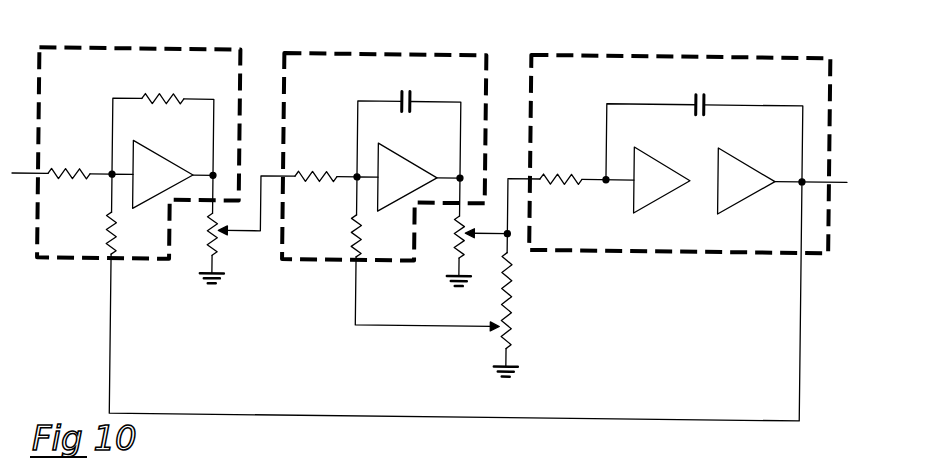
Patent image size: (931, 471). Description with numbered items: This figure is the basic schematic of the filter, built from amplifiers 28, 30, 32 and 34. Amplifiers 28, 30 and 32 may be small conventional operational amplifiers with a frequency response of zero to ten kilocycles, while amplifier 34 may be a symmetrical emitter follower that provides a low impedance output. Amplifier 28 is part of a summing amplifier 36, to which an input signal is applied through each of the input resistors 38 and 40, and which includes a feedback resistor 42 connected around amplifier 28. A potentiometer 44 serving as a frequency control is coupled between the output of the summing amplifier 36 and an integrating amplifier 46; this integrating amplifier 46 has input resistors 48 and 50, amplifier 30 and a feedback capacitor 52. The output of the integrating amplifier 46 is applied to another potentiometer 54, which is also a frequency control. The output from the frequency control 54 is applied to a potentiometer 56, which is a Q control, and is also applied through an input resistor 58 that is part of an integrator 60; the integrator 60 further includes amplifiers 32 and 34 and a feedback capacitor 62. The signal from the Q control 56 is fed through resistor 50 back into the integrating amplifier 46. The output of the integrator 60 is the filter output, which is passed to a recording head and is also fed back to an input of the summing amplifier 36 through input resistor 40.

The amplifier 28 is at (160, 153).
The amplifier 30 is at (400, 151).
The amplifier 32 is at (650, 153).
The amplifier 34 is at (743, 155).
The summing amplifier 36 is at (137, 45).
The input resistor 38 is at (70, 166).
The input resistor 40 is at (108, 230).
The feedback resistor 42 is at (165, 91).
The potentiometer 44 is at (207, 228).
The integrating amplifier 46 is at (396, 47).
The input resistor 48 is at (319, 167).
The input resistor 50 is at (352, 228).
The feedback capacitor 52 is at (410, 92).
The potentiometer 54 is at (460, 229).
The potentiometer 56 is at (513, 315).
The input resistor 58 is at (564, 166).
The integrator 60 is at (712, 46).
The feedback capacitor 62 is at (705, 93).